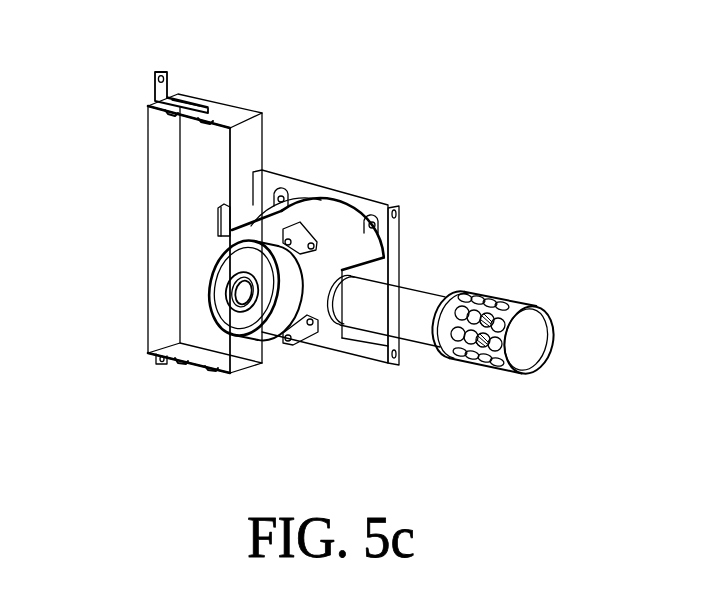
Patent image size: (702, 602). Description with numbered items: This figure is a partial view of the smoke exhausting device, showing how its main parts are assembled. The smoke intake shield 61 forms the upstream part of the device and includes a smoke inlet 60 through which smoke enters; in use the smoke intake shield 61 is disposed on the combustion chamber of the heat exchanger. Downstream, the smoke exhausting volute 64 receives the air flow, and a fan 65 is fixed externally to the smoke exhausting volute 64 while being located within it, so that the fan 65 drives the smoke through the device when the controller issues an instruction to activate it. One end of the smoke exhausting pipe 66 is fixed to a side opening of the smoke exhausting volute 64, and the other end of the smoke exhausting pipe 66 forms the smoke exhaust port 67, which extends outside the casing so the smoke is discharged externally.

The smoke inlet 60 is at (227, 217).
The smoke intake shield 61 is at (228, 113).
The smoke exhausting volute 64 is at (343, 222).
The fan 65 is at (288, 297).
The smoke exhausting pipe 66 is at (420, 300).
The smoke exhaust port 67 is at (527, 342).